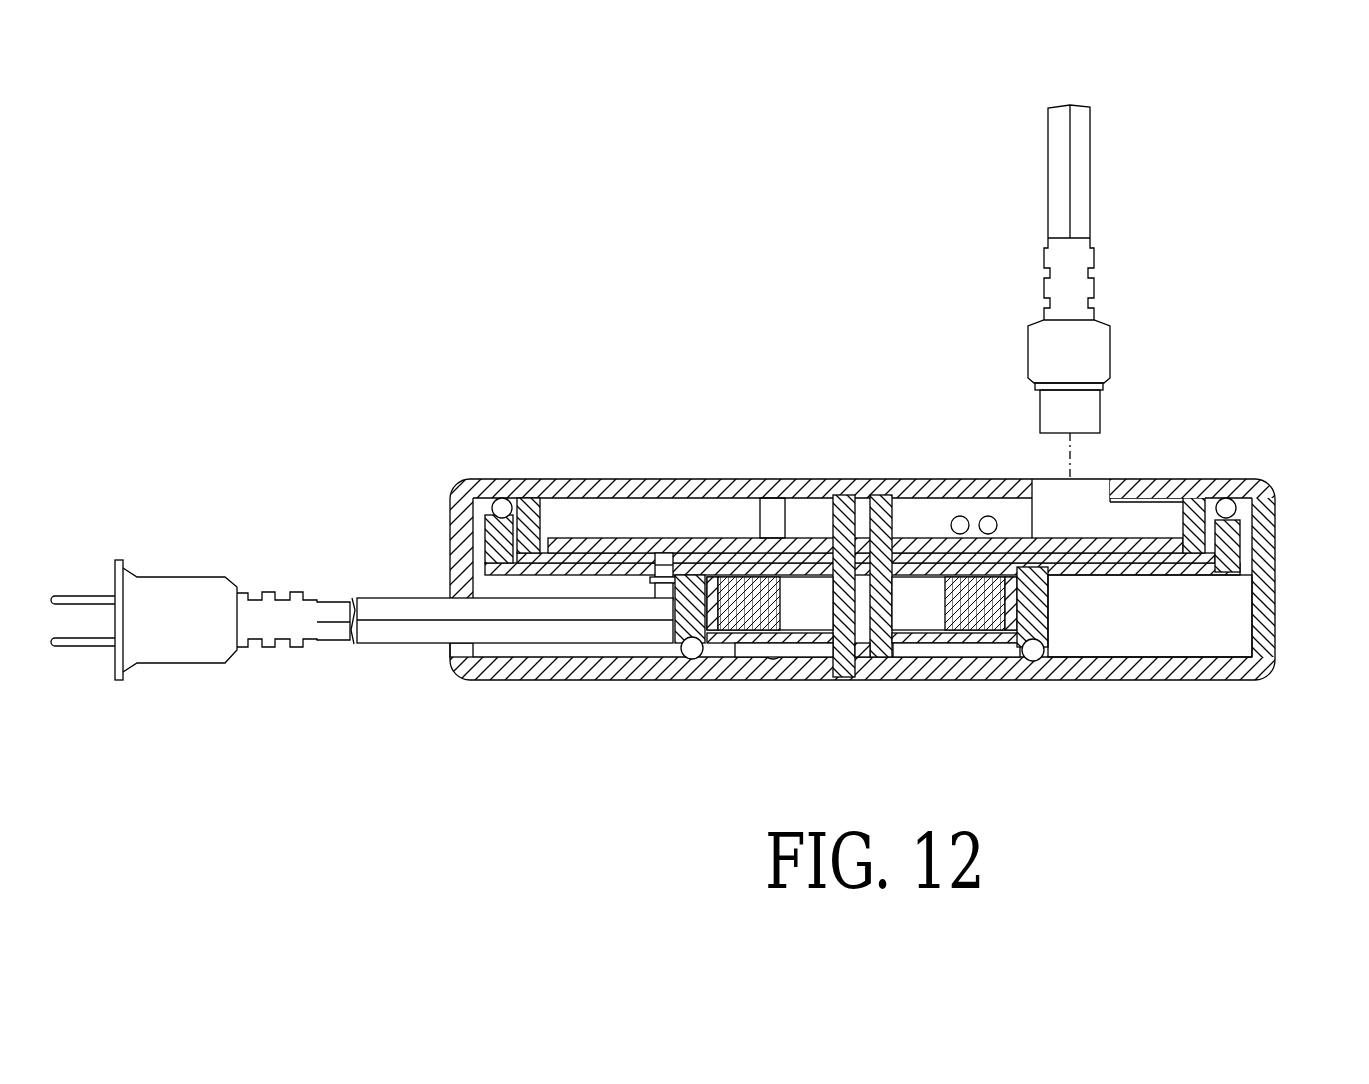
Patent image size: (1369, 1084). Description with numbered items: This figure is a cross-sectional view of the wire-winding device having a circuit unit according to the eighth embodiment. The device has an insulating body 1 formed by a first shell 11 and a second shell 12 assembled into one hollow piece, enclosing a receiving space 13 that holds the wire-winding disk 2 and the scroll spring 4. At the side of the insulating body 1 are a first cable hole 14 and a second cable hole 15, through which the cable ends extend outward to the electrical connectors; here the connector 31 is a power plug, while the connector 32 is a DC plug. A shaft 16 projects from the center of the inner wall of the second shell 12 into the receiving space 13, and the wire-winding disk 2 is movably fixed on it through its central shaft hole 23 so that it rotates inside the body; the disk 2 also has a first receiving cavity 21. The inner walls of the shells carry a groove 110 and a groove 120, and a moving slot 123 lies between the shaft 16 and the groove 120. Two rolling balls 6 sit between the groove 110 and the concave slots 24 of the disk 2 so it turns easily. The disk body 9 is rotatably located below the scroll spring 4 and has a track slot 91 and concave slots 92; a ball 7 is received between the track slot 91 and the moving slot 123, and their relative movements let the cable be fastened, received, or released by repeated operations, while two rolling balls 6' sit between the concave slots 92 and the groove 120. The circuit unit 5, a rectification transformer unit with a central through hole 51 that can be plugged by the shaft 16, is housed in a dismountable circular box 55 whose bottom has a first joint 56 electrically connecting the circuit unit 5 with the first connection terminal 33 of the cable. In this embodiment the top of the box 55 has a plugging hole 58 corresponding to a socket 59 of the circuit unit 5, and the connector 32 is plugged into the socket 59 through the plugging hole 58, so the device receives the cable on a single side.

The insulating body 1 is at (447, 518).
The wire-winding disk 2 is at (1241, 577).
The scroll spring 4 is at (708, 655).
The circuit unit 5 is at (678, 529).
The rolling balls 6 is at (492, 450).
The rolling balls 6' is at (678, 703).
The ball 7 is at (772, 661).
The disk body 9 is at (933, 646).
The first shell 11 is at (1193, 490).
The second shell 12 is at (462, 672).
The receiving space 13 is at (535, 657).
The first cable hole 14 is at (462, 592).
The second cable hole 15 is at (1268, 643).
The shaft 16 is at (870, 540).
The first receiving cavity 21 is at (1008, 640).
The shaft hole 23 is at (800, 550).
The concave slots 24 is at (1233, 527).
The electrical connector 31 is at (118, 572).
The electrical connector 32 is at (1100, 365).
The first connection terminal 33 is at (655, 590).
The through hole 51 is at (925, 555).
The box 55 is at (548, 492).
The first joint 56 is at (660, 553).
The plugging hole 58 is at (1128, 485).
The socket 59 is at (1045, 485).
The track slot 91 is at (802, 660).
The concave slots 92 is at (1045, 637).
The groove 110 is at (1235, 497).
The groove 120 is at (1035, 662).
The moving slot 123 is at (785, 658).